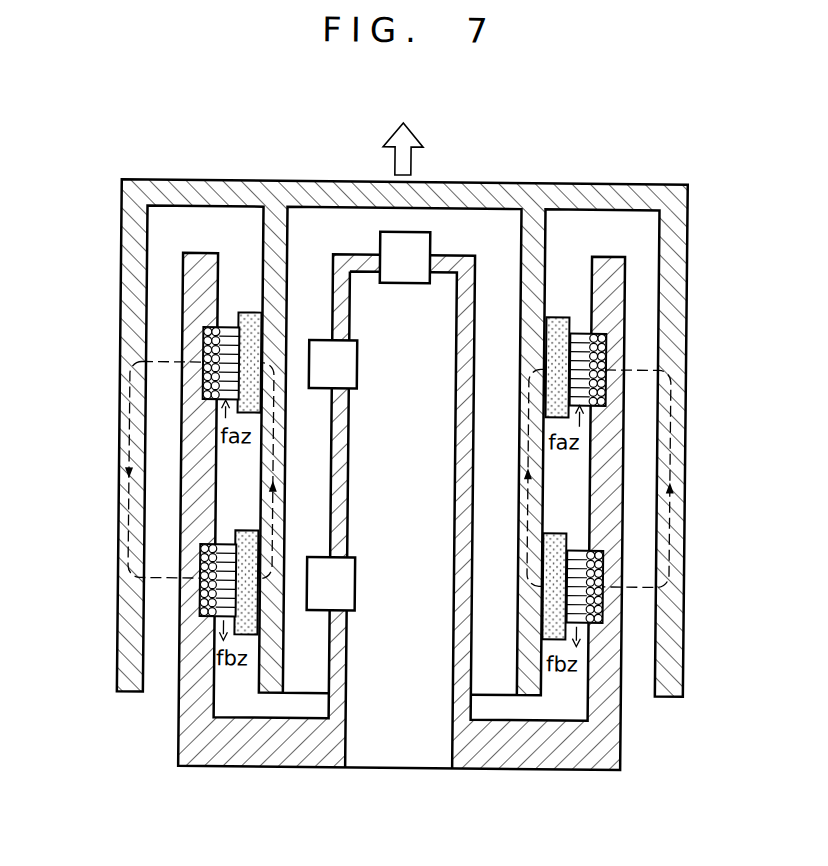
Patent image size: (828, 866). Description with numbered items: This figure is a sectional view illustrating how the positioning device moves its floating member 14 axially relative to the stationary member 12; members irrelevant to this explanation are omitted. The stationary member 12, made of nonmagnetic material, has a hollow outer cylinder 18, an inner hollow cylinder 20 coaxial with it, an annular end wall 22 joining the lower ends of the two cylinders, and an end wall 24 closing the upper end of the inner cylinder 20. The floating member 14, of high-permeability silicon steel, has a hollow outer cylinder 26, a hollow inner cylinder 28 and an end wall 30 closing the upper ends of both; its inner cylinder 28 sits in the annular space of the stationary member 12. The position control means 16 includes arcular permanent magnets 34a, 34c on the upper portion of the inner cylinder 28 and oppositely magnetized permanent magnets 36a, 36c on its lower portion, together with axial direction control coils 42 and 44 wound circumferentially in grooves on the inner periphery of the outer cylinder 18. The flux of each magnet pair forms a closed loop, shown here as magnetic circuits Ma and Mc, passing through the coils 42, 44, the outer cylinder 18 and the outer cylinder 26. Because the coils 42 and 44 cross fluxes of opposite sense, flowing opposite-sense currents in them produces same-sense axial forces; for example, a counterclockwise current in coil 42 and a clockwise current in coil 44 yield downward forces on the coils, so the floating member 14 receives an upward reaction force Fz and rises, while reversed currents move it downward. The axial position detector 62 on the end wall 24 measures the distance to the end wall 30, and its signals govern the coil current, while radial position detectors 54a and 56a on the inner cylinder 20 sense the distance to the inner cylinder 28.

The stationary member 12 is at (252, 752).
The floating member 14 is at (512, 192).
The position control means 16 is at (226, 257).
The hollow outer cylinder of the stationary member 18 is at (196, 256).
The inner hollow cylinder of the stationary member 20 is at (462, 470).
The annular end wall 22 is at (526, 757).
The end wall of the inner cylinder 24 is at (338, 302).
The hollow outer cylinder of the floating member 26 is at (128, 302).
The hollow inner cylinder of the floating member 28 is at (518, 342).
The end wall of the floating member 30 is at (333, 192).
The permanent magnet 34a is at (246, 313).
The permanent magnet 34c is at (555, 318).
The permanent magnet 36a is at (256, 615).
The permanent magnet 36c is at (555, 533).
The axial direction control coil 42 is at (228, 328).
The axial direction control coil 44 is at (226, 558).
The radial position detector 54a is at (352, 358).
The radial position detector 56a is at (350, 572).
The axial position detector 62 is at (420, 243).
The magnetic circuit Ma is at (121, 538).
The magnetic circuit Mc is at (686, 452).
The axially upward reaction force Fz is at (403, 140).